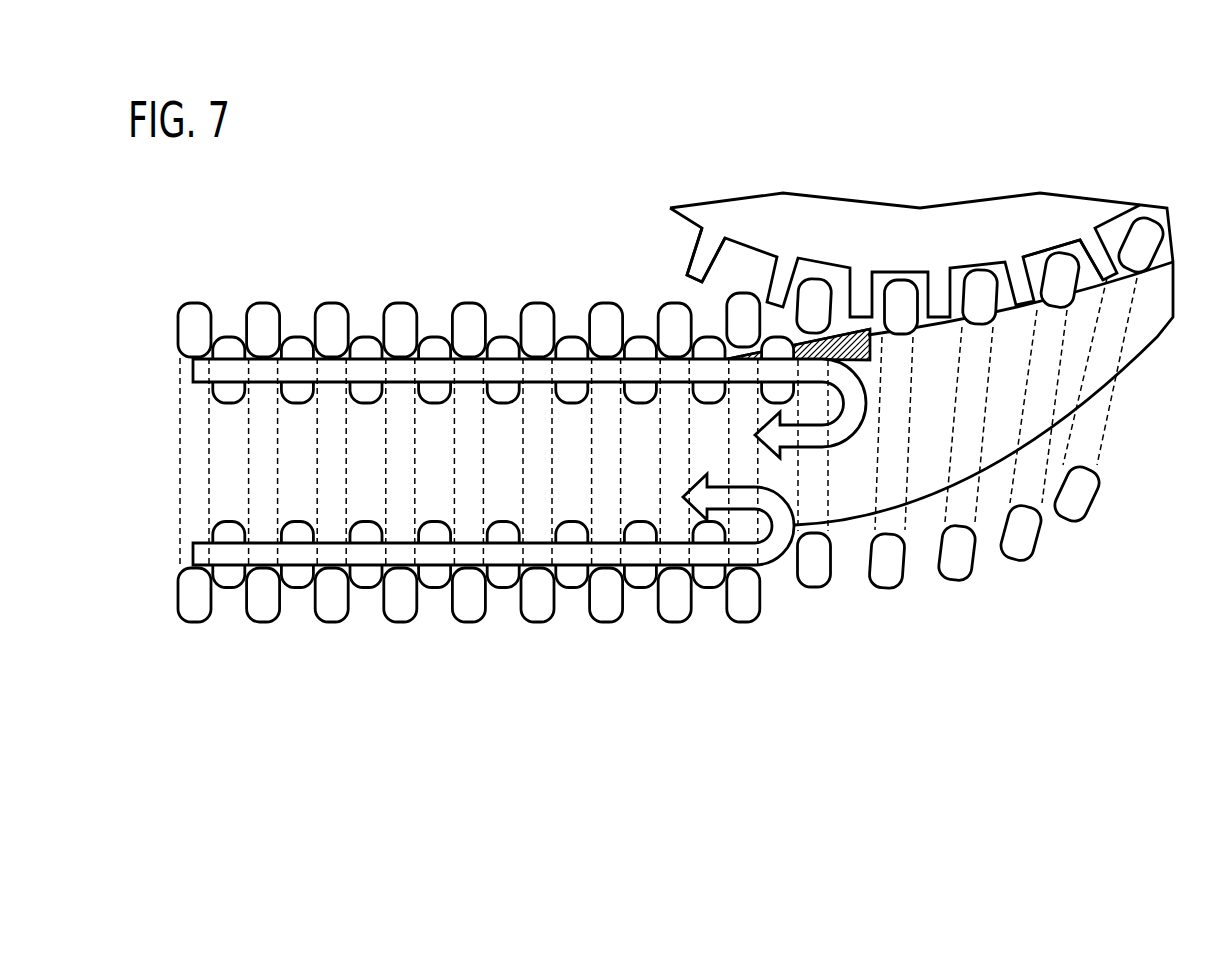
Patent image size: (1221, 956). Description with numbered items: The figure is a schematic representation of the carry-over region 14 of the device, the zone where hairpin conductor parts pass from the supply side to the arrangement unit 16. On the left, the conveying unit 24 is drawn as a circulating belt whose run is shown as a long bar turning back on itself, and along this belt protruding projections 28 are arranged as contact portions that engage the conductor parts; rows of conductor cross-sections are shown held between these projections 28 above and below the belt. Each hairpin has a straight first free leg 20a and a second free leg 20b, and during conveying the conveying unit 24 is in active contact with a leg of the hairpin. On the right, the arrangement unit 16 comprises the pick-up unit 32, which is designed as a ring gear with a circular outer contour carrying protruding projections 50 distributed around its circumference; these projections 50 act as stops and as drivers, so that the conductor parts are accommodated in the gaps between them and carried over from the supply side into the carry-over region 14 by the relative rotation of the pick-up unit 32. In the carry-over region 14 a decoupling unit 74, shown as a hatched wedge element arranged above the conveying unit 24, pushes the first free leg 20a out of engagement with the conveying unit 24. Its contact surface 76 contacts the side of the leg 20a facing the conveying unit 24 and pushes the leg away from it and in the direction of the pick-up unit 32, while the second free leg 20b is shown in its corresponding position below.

The carry-over region 14 is at (798, 250).
The arrangement unit 16 is at (944, 232).
The pick-up unit 32 is at (1063, 216).
The projections 50 is at (702, 250).
The first free leg 20a is at (817, 290).
The second free leg 20b is at (812, 580).
The conveying unit 24 is at (216, 370).
The projections 28 is at (366, 345).
The decoupling unit 74 is at (868, 343).
The contact surface 76 is at (862, 330).